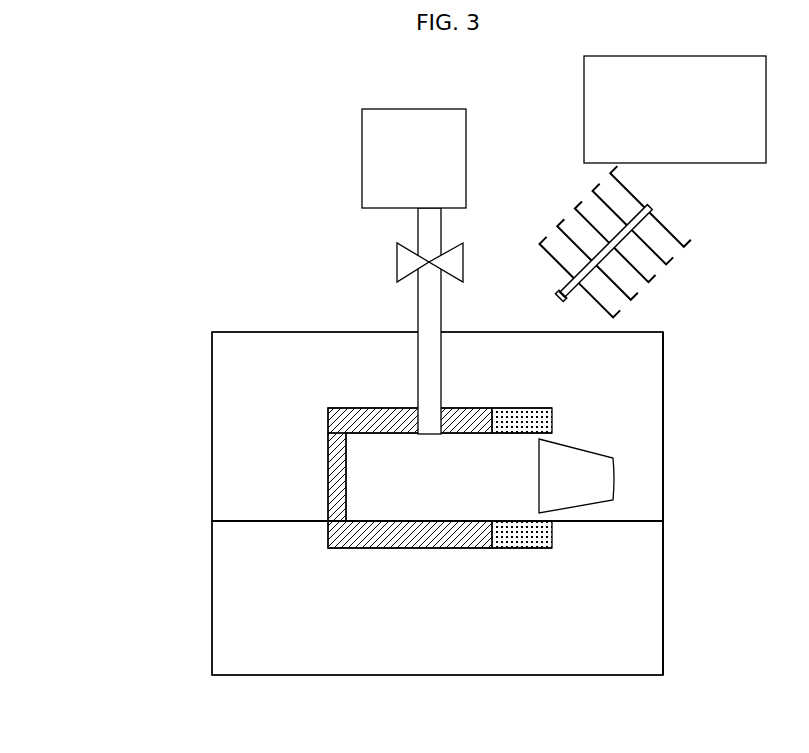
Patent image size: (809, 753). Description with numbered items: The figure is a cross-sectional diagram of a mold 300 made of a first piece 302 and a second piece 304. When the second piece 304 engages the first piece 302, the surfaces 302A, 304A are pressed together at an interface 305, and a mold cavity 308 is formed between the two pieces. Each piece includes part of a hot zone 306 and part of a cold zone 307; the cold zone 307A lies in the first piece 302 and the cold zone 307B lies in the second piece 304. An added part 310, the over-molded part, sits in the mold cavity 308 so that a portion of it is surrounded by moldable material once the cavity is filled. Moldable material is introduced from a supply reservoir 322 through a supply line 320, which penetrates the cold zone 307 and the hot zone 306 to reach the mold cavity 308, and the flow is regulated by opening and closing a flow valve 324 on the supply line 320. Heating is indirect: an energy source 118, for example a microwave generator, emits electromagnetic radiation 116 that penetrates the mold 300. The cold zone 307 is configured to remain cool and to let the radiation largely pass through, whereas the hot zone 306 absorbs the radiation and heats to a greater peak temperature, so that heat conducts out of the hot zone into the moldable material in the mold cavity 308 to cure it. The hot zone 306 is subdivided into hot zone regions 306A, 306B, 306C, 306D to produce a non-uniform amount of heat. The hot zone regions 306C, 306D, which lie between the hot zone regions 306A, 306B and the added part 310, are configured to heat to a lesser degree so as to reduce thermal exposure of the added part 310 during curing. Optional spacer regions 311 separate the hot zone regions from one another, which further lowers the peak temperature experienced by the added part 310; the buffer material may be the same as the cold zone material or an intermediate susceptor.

The mold 300 is at (123, 181).
The first piece 302 is at (209, 427).
The surface 302A is at (641, 516).
The second piece 304 is at (209, 598).
The surface 304A is at (230, 524).
The interface 305 is at (209, 521).
The hot zone 306 is at (405, 487).
The hot zone region 306A is at (363, 407).
The hot zone region 306B is at (375, 549).
The hot zone region 306C is at (528, 407).
The hot zone region 306D is at (528, 549).
The cold zone 307 is at (666, 545).
The cold zone 307A is at (666, 428).
The cold zone 307B is at (666, 598).
The mold cavity 308 is at (369, 490).
The added part 310 is at (558, 490).
The spacer region 311 is at (500, 437).
The supply line 320 is at (415, 310).
The supply reservoir 322 is at (394, 170).
The flow valve 324 is at (395, 262).
The electromagnetic radiation 116 is at (569, 212).
The energy source 118 is at (658, 124).